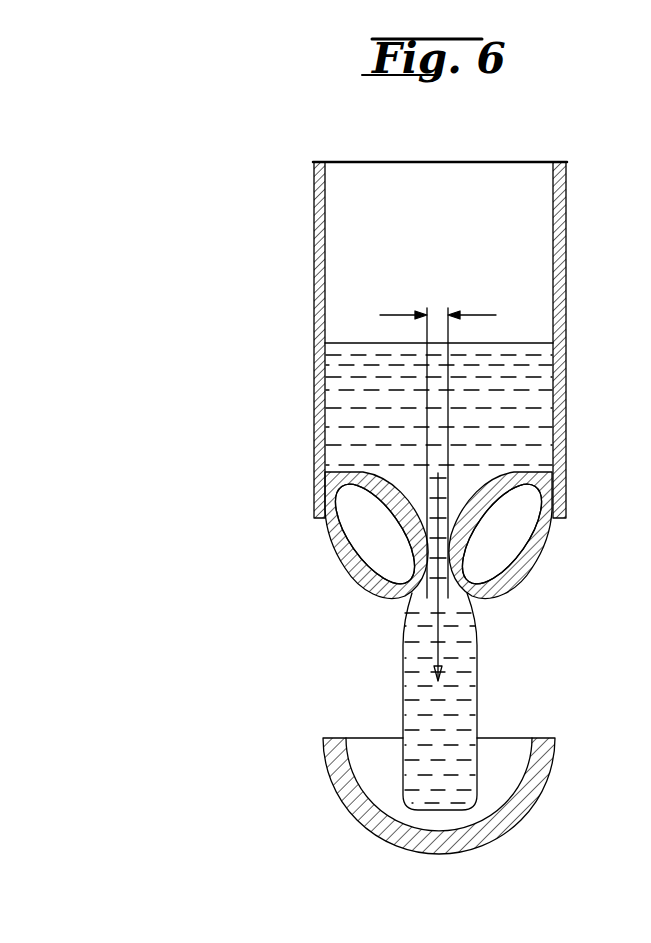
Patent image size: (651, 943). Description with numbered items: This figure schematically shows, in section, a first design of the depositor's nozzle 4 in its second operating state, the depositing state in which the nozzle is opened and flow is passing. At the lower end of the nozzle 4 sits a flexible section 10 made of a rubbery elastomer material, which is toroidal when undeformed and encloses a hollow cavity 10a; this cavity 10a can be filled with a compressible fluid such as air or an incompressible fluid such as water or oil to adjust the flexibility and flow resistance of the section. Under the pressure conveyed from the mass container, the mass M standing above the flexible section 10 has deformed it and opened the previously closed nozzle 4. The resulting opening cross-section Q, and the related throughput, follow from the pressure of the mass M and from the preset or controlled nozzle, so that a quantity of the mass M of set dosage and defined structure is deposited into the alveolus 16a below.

The nozzle 4 is at (313, 270).
The mass M is at (517, 415).
The opening cross-section Q is at (438, 477).
The flexible section 10 is at (331, 533).
The hollow cavity 10a is at (386, 565).
The alveolus 16a is at (512, 805).